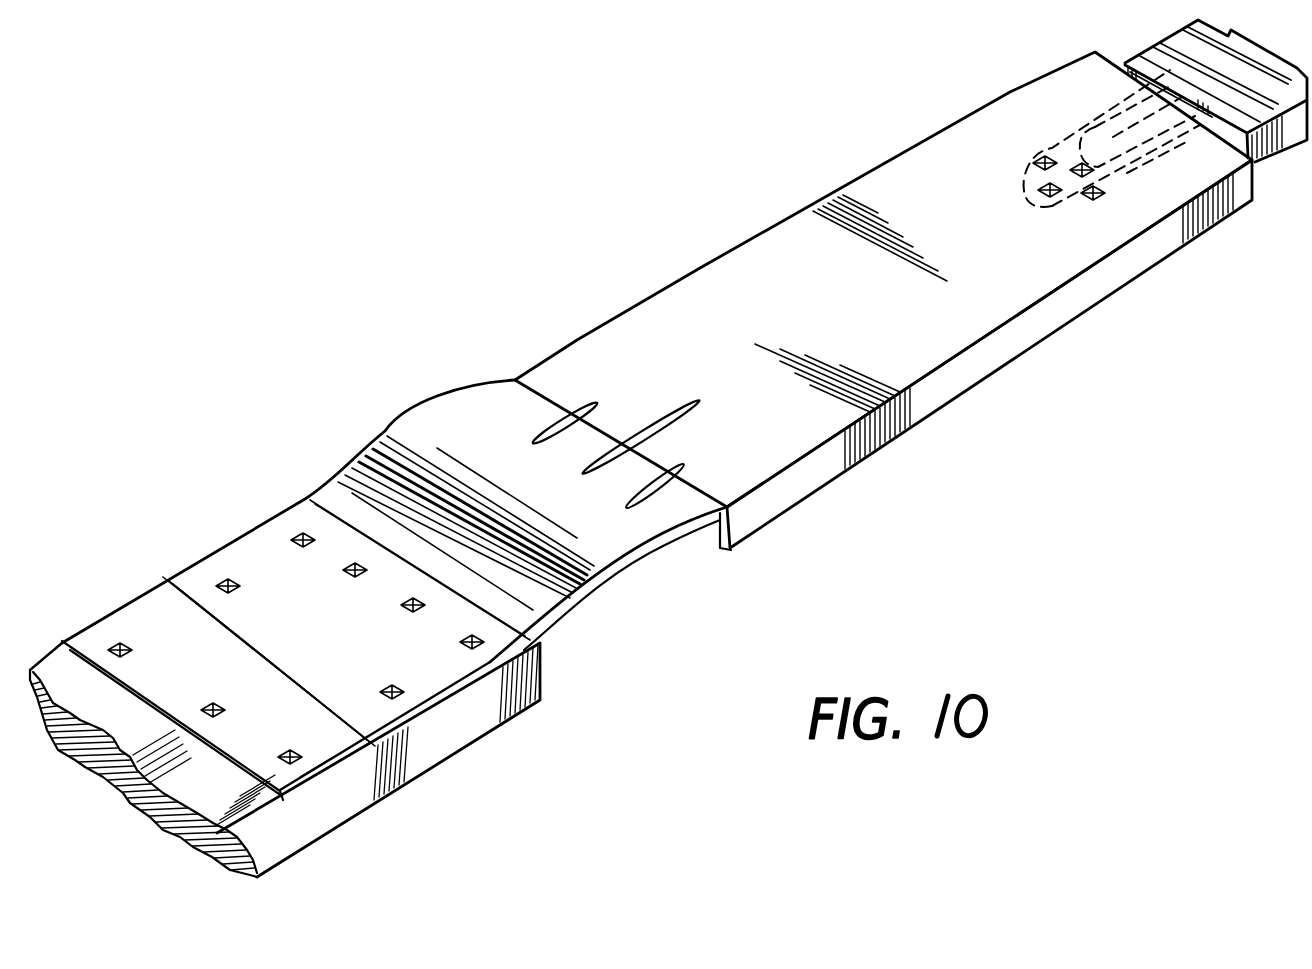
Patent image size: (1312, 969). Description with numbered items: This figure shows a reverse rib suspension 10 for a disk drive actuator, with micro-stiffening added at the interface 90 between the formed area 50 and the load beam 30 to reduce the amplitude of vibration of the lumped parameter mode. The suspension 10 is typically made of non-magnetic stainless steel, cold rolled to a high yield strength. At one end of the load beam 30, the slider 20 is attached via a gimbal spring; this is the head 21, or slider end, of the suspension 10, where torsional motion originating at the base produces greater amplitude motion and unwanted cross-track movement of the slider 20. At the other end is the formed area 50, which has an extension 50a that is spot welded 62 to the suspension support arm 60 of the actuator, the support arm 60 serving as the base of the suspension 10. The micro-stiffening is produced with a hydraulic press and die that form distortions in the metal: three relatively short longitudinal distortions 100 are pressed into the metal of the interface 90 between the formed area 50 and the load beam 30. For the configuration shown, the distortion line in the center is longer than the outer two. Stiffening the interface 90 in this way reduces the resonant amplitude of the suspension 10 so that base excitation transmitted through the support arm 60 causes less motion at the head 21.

The suspension 10 is at (620, 250).
The slider 20 is at (1277, 145).
The head 21 is at (1027, 110).
The load beam 30 is at (1145, 252).
The formed area 50 is at (452, 413).
The extension 50a is at (343, 760).
The suspension support arm 60 is at (453, 728).
The spot weld 62 is at (305, 530).
The interface 90 is at (545, 395).
The longitudinal distortions 100 is at (672, 468).